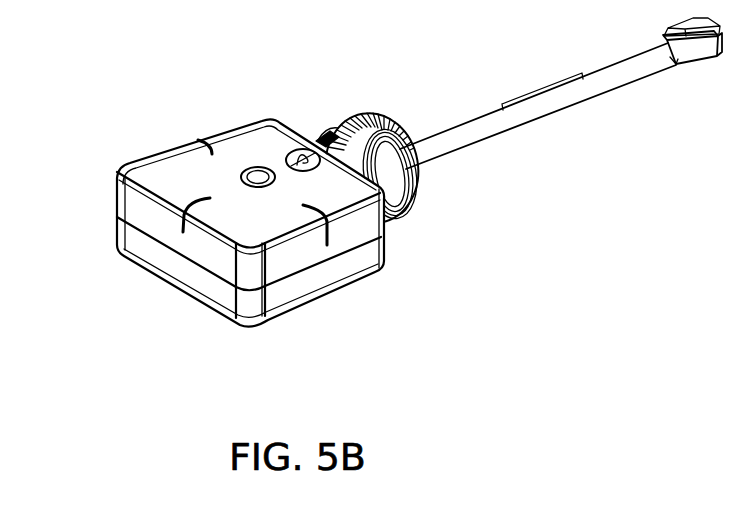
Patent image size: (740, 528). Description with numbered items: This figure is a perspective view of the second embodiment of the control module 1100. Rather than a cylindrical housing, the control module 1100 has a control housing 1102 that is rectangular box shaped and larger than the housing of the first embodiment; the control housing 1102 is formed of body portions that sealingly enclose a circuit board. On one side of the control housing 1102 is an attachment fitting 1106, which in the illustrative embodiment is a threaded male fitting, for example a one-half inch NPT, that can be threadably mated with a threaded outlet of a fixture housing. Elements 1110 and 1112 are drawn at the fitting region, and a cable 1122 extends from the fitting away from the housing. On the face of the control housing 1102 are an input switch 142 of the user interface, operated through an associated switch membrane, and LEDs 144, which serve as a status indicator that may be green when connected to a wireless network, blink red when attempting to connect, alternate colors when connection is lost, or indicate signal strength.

The control module 1100 is at (378, 201).
The control housing 1102 is at (380, 272).
The attachment fitting 1106 is at (414, 173).
The knurled nut 1110 is at (379, 120).
The threaded boss 1112 is at (330, 122).
The cable with connector 1122 is at (545, 116).
The input switch 142 is at (242, 176).
The LEDs 144 is at (205, 140).